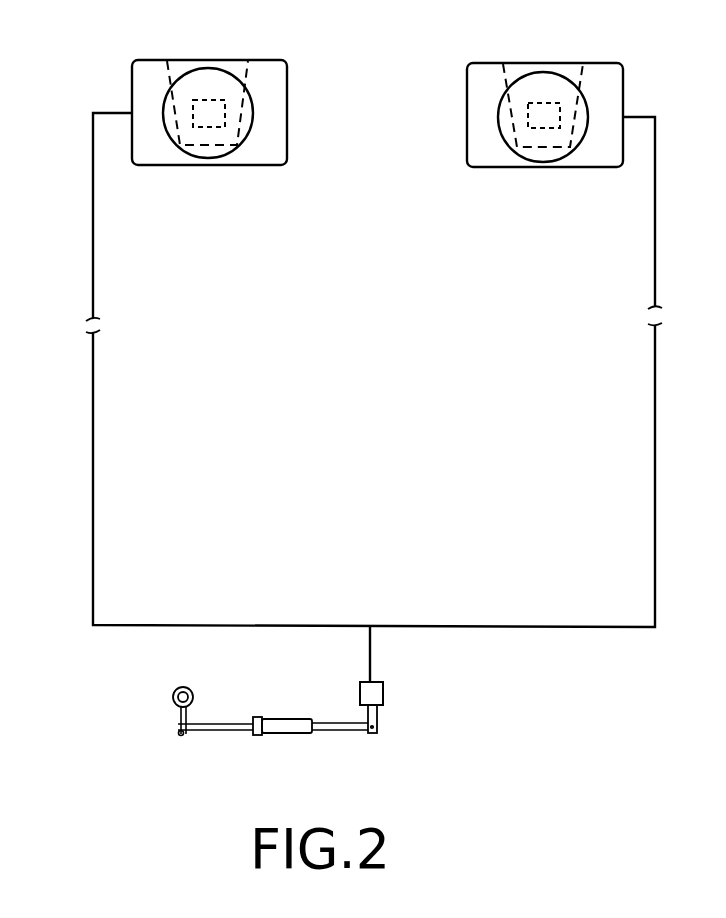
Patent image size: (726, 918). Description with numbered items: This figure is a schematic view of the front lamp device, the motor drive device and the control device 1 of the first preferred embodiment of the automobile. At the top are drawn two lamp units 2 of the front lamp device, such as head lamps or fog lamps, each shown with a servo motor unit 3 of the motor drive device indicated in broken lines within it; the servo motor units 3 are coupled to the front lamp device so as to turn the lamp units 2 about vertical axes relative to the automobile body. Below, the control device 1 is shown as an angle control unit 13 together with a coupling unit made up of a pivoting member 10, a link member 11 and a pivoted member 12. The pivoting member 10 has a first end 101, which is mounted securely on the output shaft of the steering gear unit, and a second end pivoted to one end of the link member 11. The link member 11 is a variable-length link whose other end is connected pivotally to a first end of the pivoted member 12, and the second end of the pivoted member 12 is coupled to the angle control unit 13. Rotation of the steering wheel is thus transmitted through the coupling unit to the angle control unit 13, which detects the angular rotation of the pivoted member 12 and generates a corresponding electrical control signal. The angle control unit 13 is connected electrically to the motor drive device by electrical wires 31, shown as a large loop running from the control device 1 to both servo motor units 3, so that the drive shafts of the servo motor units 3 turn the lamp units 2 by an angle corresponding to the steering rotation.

The control device 1 is at (330, 743).
The lamp units 2 is at (287, 83).
The servo motor units 3 is at (222, 99).
The pivoting member 10 is at (180, 716).
The first end of the pivoting member 101 is at (175, 691).
The link member 11 is at (284, 719).
The pivoted member 12 is at (377, 718).
The angle control unit 13 is at (372, 692).
The electrical wires 31 is at (656, 461).